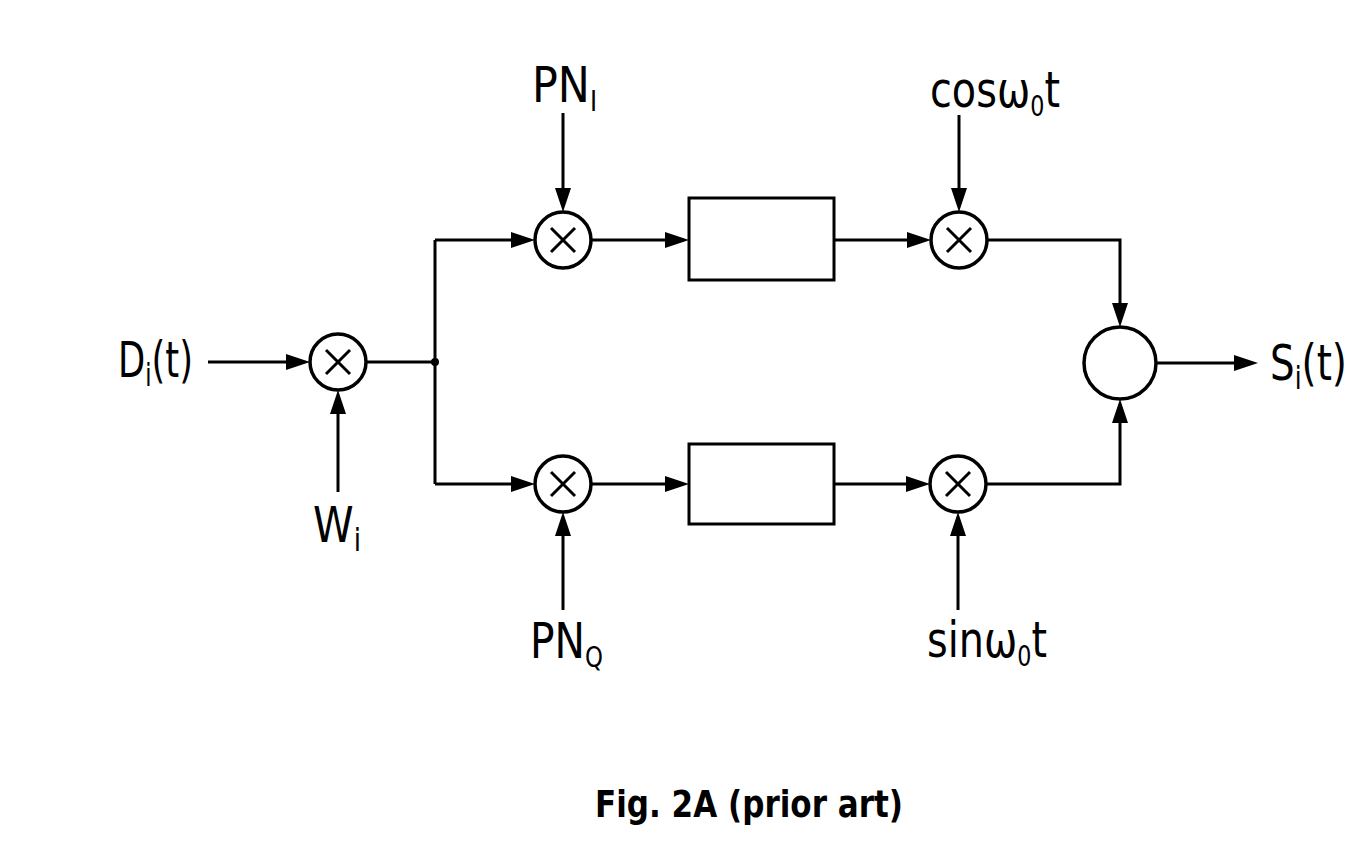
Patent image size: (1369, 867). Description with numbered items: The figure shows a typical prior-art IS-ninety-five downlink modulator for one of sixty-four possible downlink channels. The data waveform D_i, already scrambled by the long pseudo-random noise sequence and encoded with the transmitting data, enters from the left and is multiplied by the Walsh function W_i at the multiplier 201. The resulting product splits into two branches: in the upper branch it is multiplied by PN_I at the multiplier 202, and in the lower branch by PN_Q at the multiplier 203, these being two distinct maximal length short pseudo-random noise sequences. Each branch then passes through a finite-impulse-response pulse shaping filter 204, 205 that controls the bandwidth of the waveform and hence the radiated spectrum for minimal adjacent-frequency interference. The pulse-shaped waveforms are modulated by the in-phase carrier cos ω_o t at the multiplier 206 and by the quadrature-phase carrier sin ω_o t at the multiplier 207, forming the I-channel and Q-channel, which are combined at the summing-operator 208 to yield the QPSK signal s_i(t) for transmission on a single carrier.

The multiplier 201 is at (338, 334).
The multiplier 202 is at (583, 261).
The multiplier 203 is at (558, 456).
The FIR pulse shaping filter 204 is at (755, 281).
The FIR pulse shaping filter 205 is at (740, 445).
The multiplier 206 is at (977, 264).
The multiplier 207 is at (952, 458).
The summing-operator 208 is at (1152, 344).